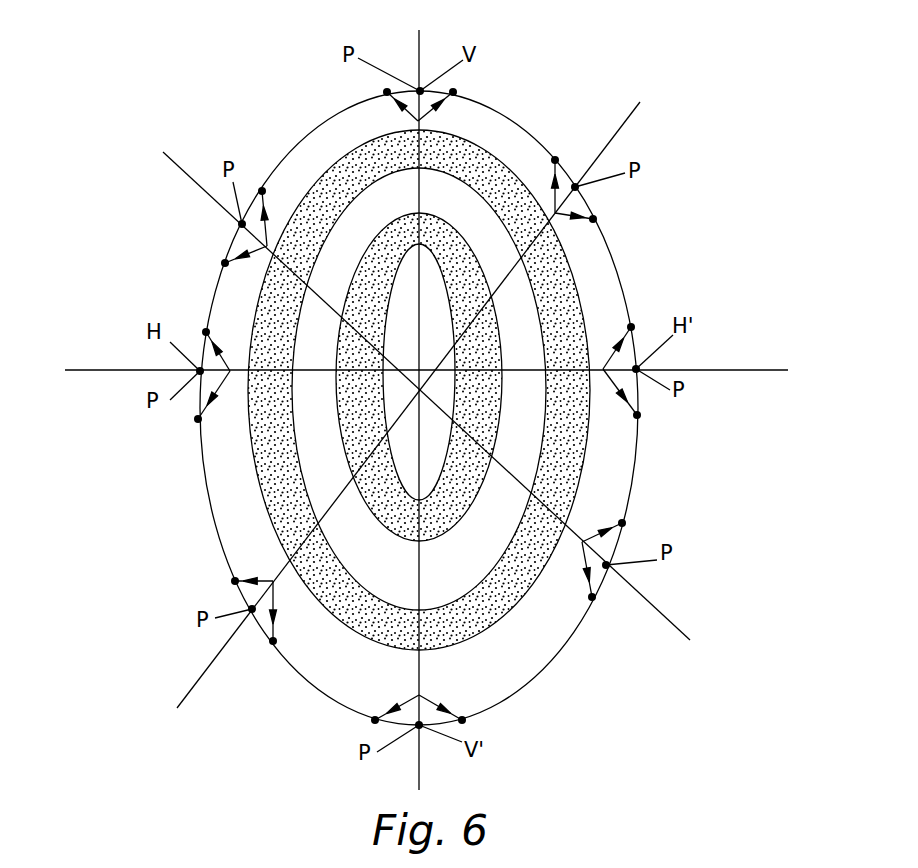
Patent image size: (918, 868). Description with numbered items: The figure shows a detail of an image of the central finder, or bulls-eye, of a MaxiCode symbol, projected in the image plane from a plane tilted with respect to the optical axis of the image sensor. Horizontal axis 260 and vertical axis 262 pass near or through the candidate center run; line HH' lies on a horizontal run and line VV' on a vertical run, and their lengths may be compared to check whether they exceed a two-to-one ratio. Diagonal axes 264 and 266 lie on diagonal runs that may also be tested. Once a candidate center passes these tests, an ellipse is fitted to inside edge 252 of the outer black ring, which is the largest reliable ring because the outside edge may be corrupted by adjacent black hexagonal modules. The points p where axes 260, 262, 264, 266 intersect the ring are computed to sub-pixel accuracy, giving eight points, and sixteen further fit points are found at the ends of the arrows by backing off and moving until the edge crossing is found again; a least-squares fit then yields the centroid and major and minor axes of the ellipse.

The inside edge of the outer black ring 252 is at (608, 248).
The horizontal axis 260 is at (768, 366).
The vertical axis 262 is at (420, 45).
The diagonal axis 264 is at (165, 154).
The diagonal axis 266 is at (640, 102).